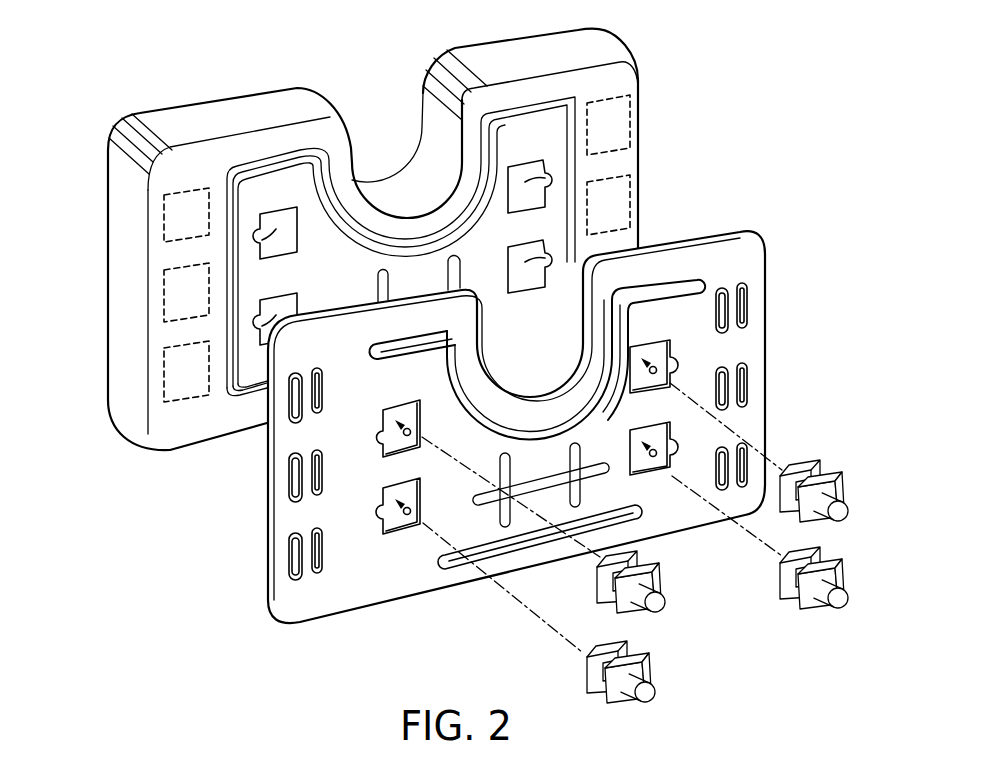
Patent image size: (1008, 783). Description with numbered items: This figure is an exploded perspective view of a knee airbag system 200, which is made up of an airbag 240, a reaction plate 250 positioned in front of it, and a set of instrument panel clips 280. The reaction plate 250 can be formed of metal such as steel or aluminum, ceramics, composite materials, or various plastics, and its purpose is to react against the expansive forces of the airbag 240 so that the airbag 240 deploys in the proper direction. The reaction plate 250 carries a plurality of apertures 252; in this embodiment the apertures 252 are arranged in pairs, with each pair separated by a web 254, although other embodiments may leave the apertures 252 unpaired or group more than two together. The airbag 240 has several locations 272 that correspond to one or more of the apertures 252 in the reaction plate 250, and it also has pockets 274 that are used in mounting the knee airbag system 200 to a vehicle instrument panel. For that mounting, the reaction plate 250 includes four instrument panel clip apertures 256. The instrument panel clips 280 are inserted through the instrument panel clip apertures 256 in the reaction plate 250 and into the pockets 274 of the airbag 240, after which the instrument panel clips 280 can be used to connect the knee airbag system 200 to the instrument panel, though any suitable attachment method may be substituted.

The knee airbag system 200 is at (205, 78).
The airbag 240 is at (652, 78).
The reaction plate 250 is at (778, 262).
The apertures 252 is at (289, 405).
The web 254 is at (300, 478).
The instrument panel clip apertures 256 is at (650, 462).
The locations 272 is at (164, 220).
The pockets 274 is at (256, 242).
The instrument panel clips 280 is at (803, 517).